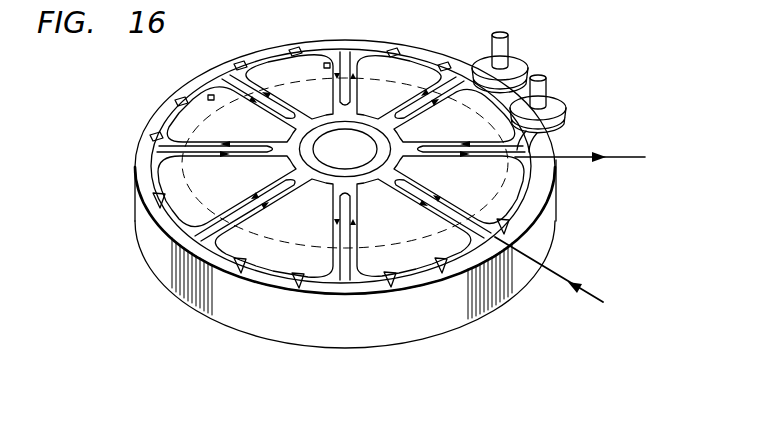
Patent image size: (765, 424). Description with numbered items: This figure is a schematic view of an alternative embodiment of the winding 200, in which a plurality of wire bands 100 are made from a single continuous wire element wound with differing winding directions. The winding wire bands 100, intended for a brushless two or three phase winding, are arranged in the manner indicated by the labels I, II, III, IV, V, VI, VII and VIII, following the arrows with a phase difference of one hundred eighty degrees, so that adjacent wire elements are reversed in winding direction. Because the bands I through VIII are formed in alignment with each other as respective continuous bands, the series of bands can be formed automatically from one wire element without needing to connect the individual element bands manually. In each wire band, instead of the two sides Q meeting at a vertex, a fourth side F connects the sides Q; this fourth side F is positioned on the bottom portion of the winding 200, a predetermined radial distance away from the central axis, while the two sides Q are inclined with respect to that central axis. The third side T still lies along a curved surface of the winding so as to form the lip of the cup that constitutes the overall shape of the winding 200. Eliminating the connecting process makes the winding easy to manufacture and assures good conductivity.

The rotary blowing head / disk body 200 is at (126, 167).
The winding wire bands 100 is at (359, 198).
The wire band I is at (552, 208).
The wire band II is at (412, 279).
The wire band III is at (248, 290).
The wire band IV is at (158, 217).
The wire band V is at (157, 115).
The wire band VI is at (282, 52).
The wire band VII is at (407, 52).
The wire band VIII is at (550, 147).
The fourth side F is at (320, 173).
The third side T is at (283, 289).
The two sides Q is at (326, 66).